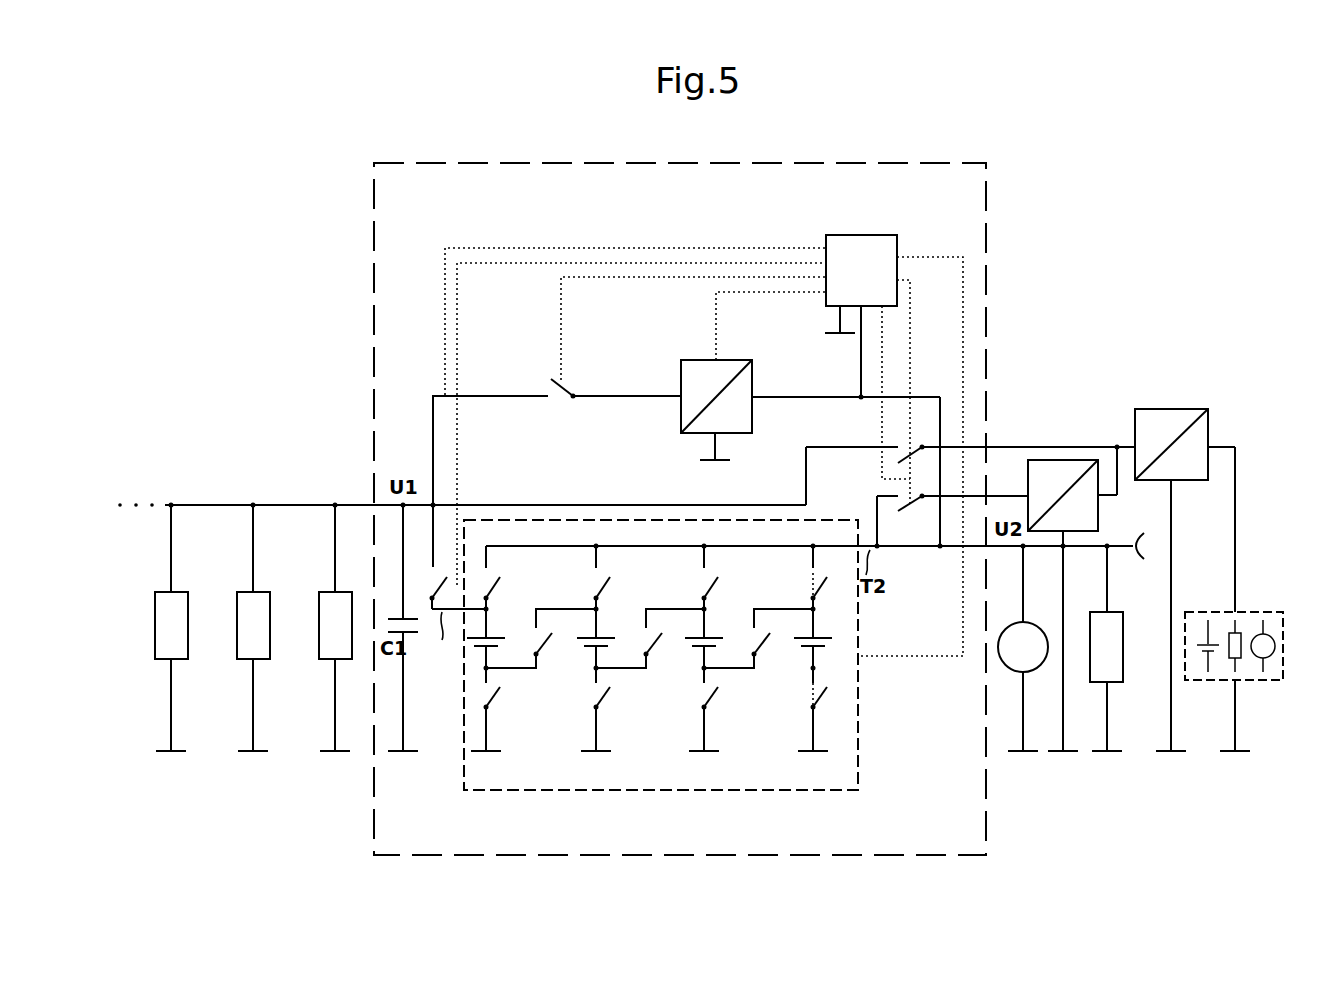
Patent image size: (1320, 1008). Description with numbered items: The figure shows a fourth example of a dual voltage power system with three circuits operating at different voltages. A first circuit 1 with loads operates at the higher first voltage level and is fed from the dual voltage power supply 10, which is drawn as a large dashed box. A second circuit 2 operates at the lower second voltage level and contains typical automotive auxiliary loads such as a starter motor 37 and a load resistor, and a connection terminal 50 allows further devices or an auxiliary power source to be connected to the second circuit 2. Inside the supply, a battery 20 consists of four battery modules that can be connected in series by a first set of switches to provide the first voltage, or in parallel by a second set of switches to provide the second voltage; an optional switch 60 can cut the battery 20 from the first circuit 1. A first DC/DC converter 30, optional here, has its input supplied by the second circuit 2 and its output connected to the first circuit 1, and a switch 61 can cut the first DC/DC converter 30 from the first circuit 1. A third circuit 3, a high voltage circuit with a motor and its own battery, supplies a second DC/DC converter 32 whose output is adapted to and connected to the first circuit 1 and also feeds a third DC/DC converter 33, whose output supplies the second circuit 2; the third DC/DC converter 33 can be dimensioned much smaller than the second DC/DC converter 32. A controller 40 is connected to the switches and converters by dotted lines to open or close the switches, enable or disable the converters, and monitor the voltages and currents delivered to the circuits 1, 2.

The first circuit 1 is at (212, 477).
The second circuit 2 is at (1108, 538).
The third circuit 3 is at (1256, 612).
The dual voltage power supply 10 is at (986, 217).
The battery 20 is at (658, 790).
The first DC/DC converter 30 is at (681, 418).
The second DC/DC converter 32 is at (1172, 409).
The third DC/DC converter 33 is at (1063, 460).
The starter motor 37 is at (1046, 673).
The controller 40 is at (862, 235).
The connection terminal 50 is at (1145, 560).
The switch 60 is at (447, 585).
The switch 61 is at (565, 400).